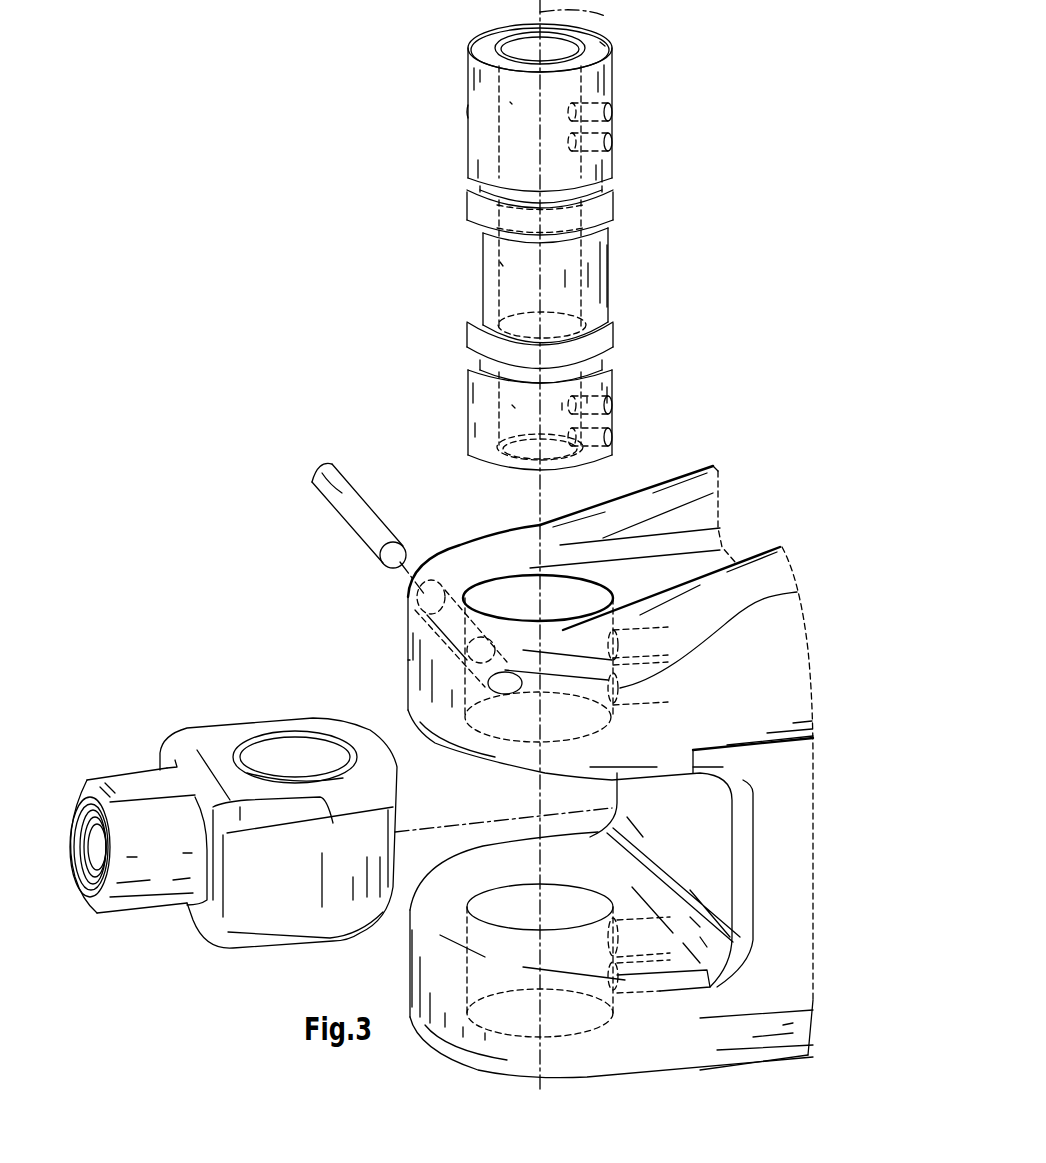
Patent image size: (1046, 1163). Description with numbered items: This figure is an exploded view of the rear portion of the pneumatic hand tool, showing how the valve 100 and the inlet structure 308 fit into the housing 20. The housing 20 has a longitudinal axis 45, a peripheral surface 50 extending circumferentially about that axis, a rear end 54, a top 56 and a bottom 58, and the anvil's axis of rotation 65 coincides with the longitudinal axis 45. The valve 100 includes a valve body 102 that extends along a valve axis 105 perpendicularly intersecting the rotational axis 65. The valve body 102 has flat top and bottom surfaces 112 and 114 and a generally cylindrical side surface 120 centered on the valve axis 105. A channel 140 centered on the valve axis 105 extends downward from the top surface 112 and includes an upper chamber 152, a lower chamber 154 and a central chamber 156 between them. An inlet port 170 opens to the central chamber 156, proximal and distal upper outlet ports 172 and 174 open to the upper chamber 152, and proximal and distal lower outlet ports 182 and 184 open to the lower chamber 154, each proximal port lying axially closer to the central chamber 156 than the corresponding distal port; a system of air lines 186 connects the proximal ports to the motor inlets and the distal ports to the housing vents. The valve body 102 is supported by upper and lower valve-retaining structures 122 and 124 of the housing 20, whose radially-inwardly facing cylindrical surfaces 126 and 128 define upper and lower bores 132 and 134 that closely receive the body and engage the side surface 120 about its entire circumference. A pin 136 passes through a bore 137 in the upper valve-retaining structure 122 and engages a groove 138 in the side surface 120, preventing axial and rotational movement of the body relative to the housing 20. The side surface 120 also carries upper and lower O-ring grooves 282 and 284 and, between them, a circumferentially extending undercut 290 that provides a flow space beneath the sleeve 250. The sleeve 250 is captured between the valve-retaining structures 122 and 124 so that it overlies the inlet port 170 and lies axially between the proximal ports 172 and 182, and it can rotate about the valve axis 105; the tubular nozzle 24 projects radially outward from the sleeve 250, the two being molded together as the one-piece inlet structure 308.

The housing 20 is at (590, 746).
The nozzle 24 is at (125, 775).
The longitudinal axis 45 is at (495, 818).
The peripheral surface 50 is at (797, 852).
The rear end 54 is at (406, 662).
The top 56 is at (700, 466).
The bottom 58 is at (805, 1056).
The axis of rotation 65 is at (448, 818).
The valve 100 is at (532, 103).
The valve body 102 is at (503, 44).
The valve axis 105 is at (593, 19).
The top surface 112 is at (600, 45).
The bottom surface 114 is at (543, 420).
The side surface 120 is at (472, 155).
The upper valve-retaining structure 122 is at (554, 729).
The lower valve-retaining structure 124 is at (581, 955).
The upper radially-inwardly facing cylindrical surface 126 is at (497, 598).
The lower radially-inwardly facing cylindrical surface 128 is at (483, 912).
The upper bore 132 is at (550, 580).
The lower bore 134 is at (550, 897).
The pin 136 is at (345, 505).
The bore 137 is at (500, 692).
The groove 138 is at (466, 112).
The channel 140 is at (534, 52).
The upper chamber 152 is at (515, 108).
The lower chamber 154 is at (515, 408).
The central chamber 156 is at (502, 266).
The inlet port 170 is at (533, 271).
The proximal upper outlet port 172 is at (614, 142).
The distal upper outlet port 174 is at (614, 112).
The proximal lower outlet port 182 is at (614, 406).
The distal lower outlet port 184 is at (614, 437).
The system of air lines 186 is at (622, 640).
The sleeve 250 is at (233, 793).
The upper O-ring groove 282 is at (616, 198).
The lower O-ring groove 284 is at (617, 338).
The undercut 290 is at (614, 266).
The inlet structure 308 is at (296, 690).